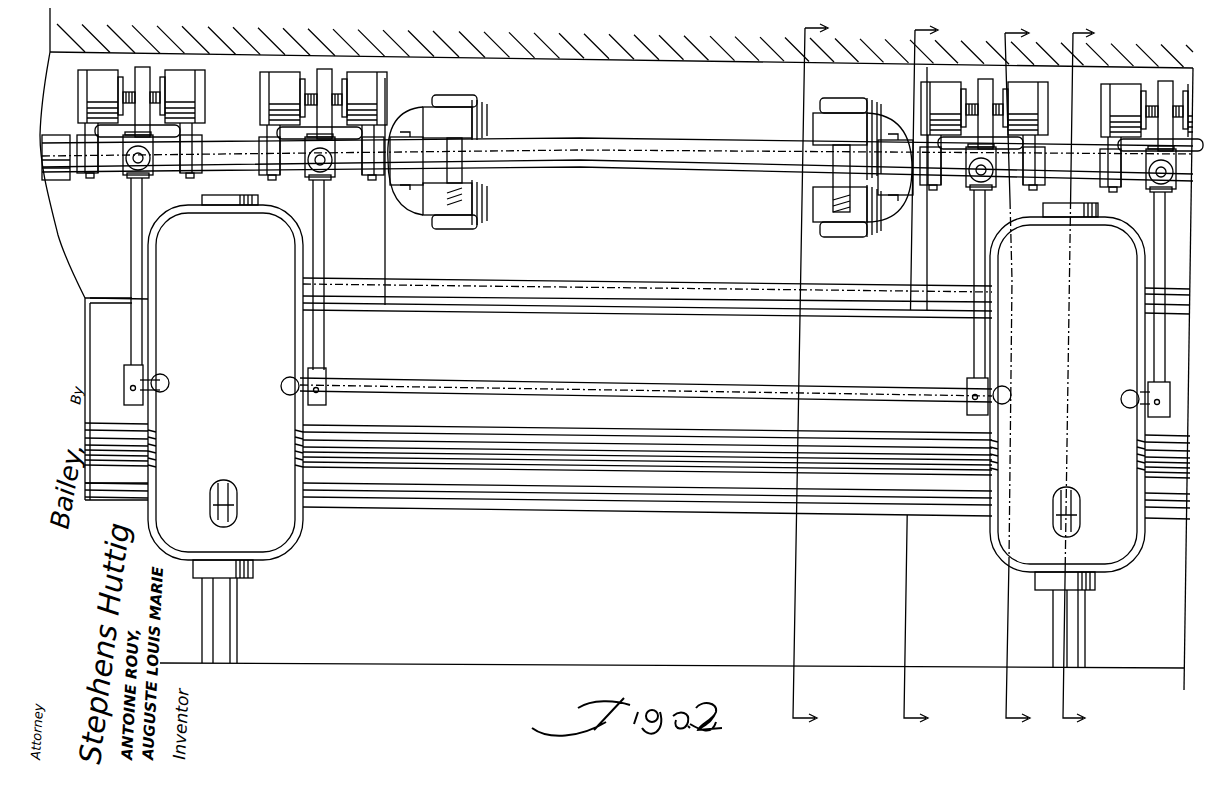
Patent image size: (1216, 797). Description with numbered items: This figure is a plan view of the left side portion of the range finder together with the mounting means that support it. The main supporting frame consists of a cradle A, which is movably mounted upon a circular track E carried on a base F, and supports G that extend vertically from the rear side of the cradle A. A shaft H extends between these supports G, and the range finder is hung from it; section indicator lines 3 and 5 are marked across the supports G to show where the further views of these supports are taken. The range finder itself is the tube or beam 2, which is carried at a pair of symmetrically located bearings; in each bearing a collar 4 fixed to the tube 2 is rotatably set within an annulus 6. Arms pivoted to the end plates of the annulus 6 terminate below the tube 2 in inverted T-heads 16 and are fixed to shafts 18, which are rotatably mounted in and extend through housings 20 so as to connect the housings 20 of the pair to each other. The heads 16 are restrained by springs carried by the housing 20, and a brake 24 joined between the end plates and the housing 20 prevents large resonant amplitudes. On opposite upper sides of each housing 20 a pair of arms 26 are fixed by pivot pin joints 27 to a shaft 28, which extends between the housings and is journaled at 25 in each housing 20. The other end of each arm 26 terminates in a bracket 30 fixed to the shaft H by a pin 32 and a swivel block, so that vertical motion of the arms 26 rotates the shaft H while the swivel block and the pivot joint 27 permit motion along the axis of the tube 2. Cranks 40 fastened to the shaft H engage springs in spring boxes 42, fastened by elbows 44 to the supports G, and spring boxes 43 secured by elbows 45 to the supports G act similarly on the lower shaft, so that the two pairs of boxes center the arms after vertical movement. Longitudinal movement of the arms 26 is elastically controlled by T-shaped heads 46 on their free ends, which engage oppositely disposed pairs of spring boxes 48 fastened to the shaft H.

The tube or beam 2 is at (664, 318).
The section line 3 is at (806, 380).
The collar 4 is at (917, 381).
The section line 5 is at (1014, 382).
The annulus 6 is at (1075, 382).
The inverted T-head 16 is at (612, 492).
The shaft 18 is at (588, 282).
The housing 20 is at (194, 500).
The brake 24 is at (236, 516).
The journal 25 is at (165, 376).
The arm 26 is at (130, 258).
The pivot pin joint 27 is at (130, 392).
The shaft 28 is at (588, 382).
The bracket 30 is at (150, 176).
The pin 32 is at (128, 174).
The crank 40 is at (808, 194).
The spring box 42 is at (490, 116).
The spring box 43 is at (466, 228).
The elbow 44 is at (428, 118).
The elbow 45 is at (413, 208).
The T-shaped head 46 is at (142, 92).
The spring box 48 is at (95, 80).
The cradle A is at (118, 460).
The circular track E is at (208, 615).
The base F is at (370, 662).
The support G is at (885, 200).
The shaft H is at (612, 162).